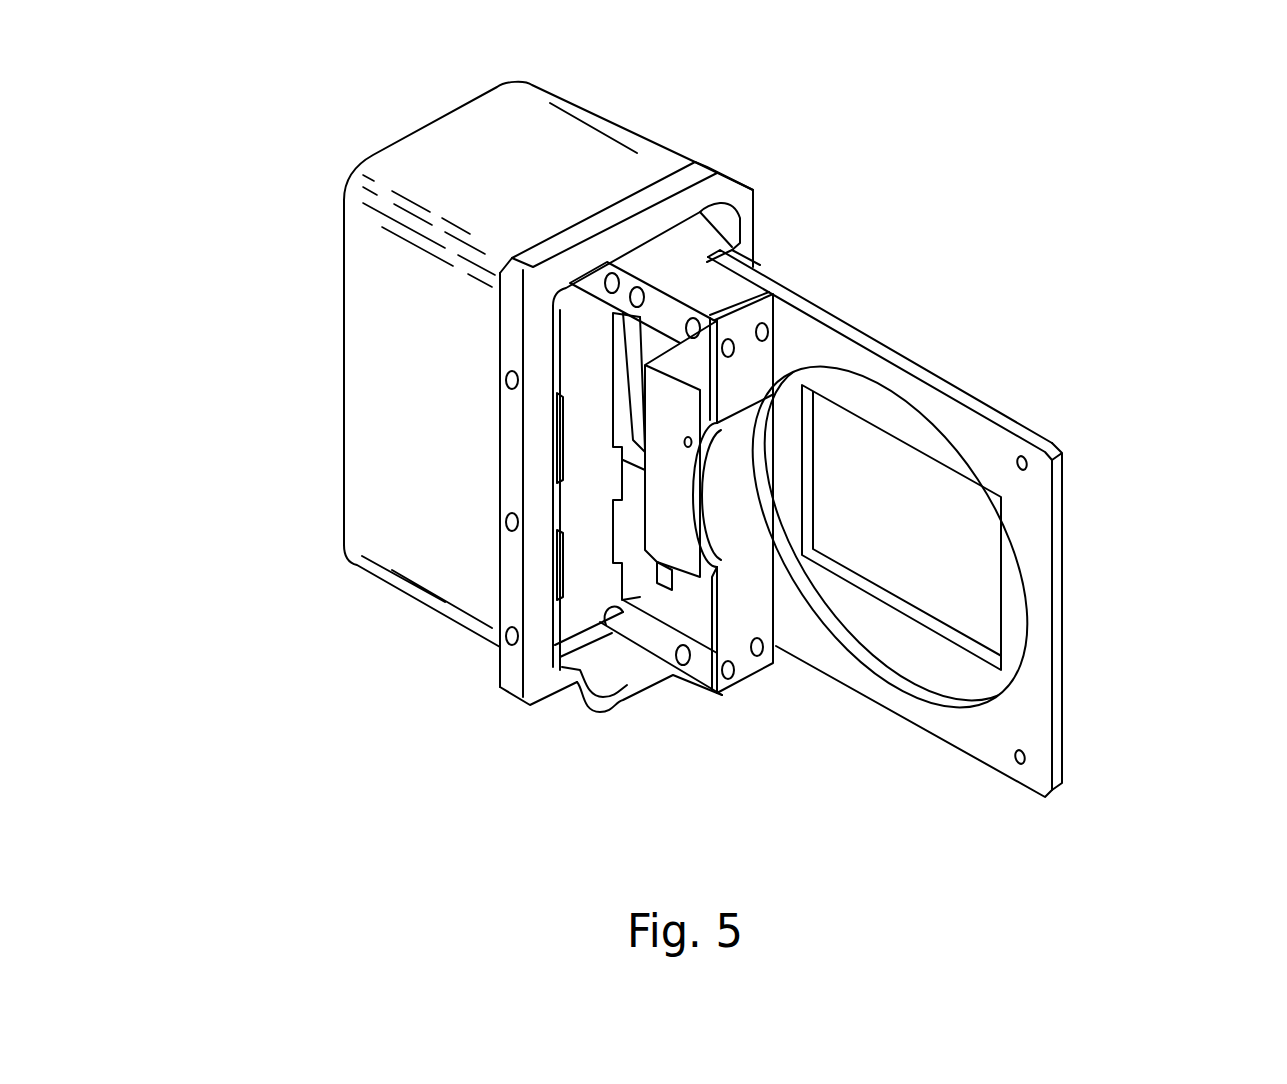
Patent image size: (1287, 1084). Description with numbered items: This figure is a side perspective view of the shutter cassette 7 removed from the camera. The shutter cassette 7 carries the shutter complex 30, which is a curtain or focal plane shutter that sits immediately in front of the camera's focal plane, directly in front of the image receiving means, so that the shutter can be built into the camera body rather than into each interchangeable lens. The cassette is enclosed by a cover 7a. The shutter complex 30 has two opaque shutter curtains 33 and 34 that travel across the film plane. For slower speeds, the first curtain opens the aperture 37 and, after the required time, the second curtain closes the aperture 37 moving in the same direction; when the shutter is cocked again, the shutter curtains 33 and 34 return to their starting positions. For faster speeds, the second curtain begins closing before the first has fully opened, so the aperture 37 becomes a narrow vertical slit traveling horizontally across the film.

The shutter cassette 7 is at (1058, 119).
The cover 7a is at (347, 317).
The shutter complex 30 is at (1116, 415).
The shutter curtain 33 is at (1002, 443).
The shutter curtain 34 is at (1062, 655).
The aperture 37 is at (882, 482).